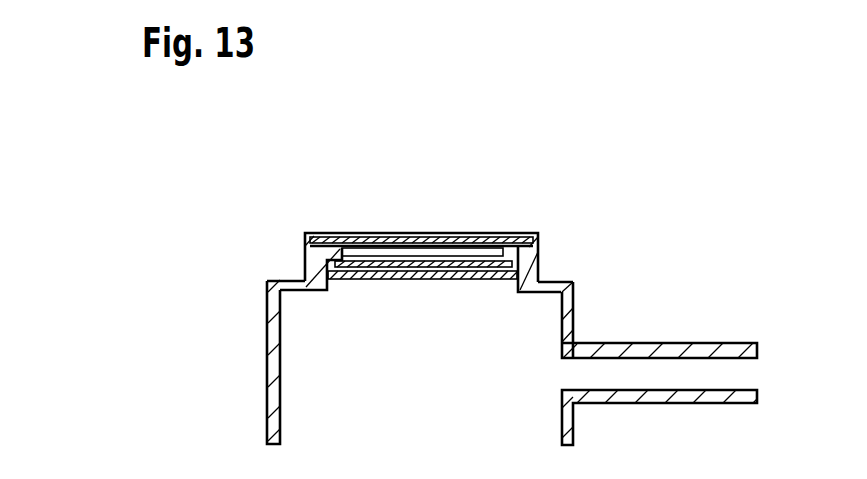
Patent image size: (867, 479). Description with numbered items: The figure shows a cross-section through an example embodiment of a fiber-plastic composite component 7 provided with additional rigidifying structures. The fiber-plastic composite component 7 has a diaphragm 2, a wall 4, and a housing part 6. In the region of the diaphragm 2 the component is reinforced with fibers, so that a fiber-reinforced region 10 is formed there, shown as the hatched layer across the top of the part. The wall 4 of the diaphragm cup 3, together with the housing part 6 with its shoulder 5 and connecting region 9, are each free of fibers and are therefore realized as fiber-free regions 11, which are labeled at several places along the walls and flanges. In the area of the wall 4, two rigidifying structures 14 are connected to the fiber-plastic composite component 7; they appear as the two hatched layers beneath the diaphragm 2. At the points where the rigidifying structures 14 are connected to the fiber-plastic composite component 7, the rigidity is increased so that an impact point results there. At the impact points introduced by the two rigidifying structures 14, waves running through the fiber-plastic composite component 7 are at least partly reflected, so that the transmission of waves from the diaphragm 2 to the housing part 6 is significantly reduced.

The diaphragm 2 is at (477, 238).
The diaphragm cup 3 is at (563, 221).
The wall 4 is at (534, 272).
The shoulder 5 is at (281, 281).
The housing part 6 is at (572, 310).
The fiber-plastic composite component 7 is at (652, 258).
The connecting region 9 is at (694, 345).
The fiber-reinforced region 10 is at (378, 238).
The fiber-free regions 11 is at (308, 260).
The rigidifying structures 14 is at (453, 270).